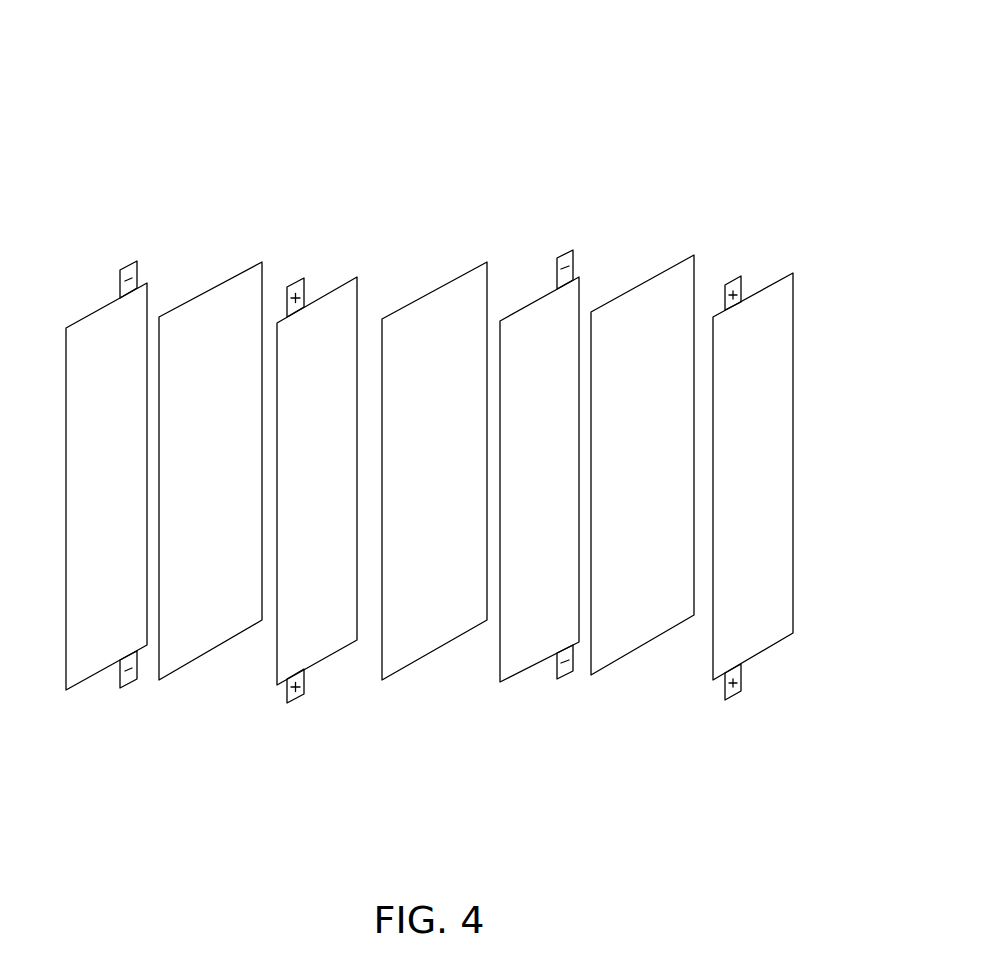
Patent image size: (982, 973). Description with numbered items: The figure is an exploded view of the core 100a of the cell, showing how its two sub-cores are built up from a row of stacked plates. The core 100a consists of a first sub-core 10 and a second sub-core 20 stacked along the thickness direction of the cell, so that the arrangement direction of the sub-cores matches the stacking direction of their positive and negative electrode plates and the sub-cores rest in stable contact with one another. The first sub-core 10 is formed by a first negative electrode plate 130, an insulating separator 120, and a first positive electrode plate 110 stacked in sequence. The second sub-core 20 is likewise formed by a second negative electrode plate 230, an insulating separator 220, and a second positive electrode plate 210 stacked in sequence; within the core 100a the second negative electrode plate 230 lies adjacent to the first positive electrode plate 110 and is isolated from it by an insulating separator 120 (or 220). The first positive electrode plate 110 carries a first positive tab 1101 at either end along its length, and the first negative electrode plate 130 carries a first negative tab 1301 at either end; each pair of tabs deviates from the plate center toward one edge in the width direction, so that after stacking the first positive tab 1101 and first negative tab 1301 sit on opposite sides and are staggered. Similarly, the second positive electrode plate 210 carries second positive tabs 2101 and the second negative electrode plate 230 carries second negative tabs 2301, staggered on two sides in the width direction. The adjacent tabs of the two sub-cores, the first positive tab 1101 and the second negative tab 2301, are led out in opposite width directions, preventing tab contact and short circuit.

The core 100a is at (365, 24).
The first sub-core 10 is at (447, 101).
The first positive electrode plate 110 is at (277, 322).
The insulating separator 120 is at (213, 287).
The first negative electrode plate 130 is at (148, 283).
The first positive tab 1101 is at (305, 277).
The first negative tab 1301 is at (130, 728).
The second sub-core 20 is at (525, 802).
The second positive electrode plate 210 is at (713, 648).
The insulating separator 220 is at (643, 648).
The second negative electrode plate 230 is at (578, 648).
The second positive tab 2101 is at (740, 277).
The second negative tab 2301 is at (563, 257).